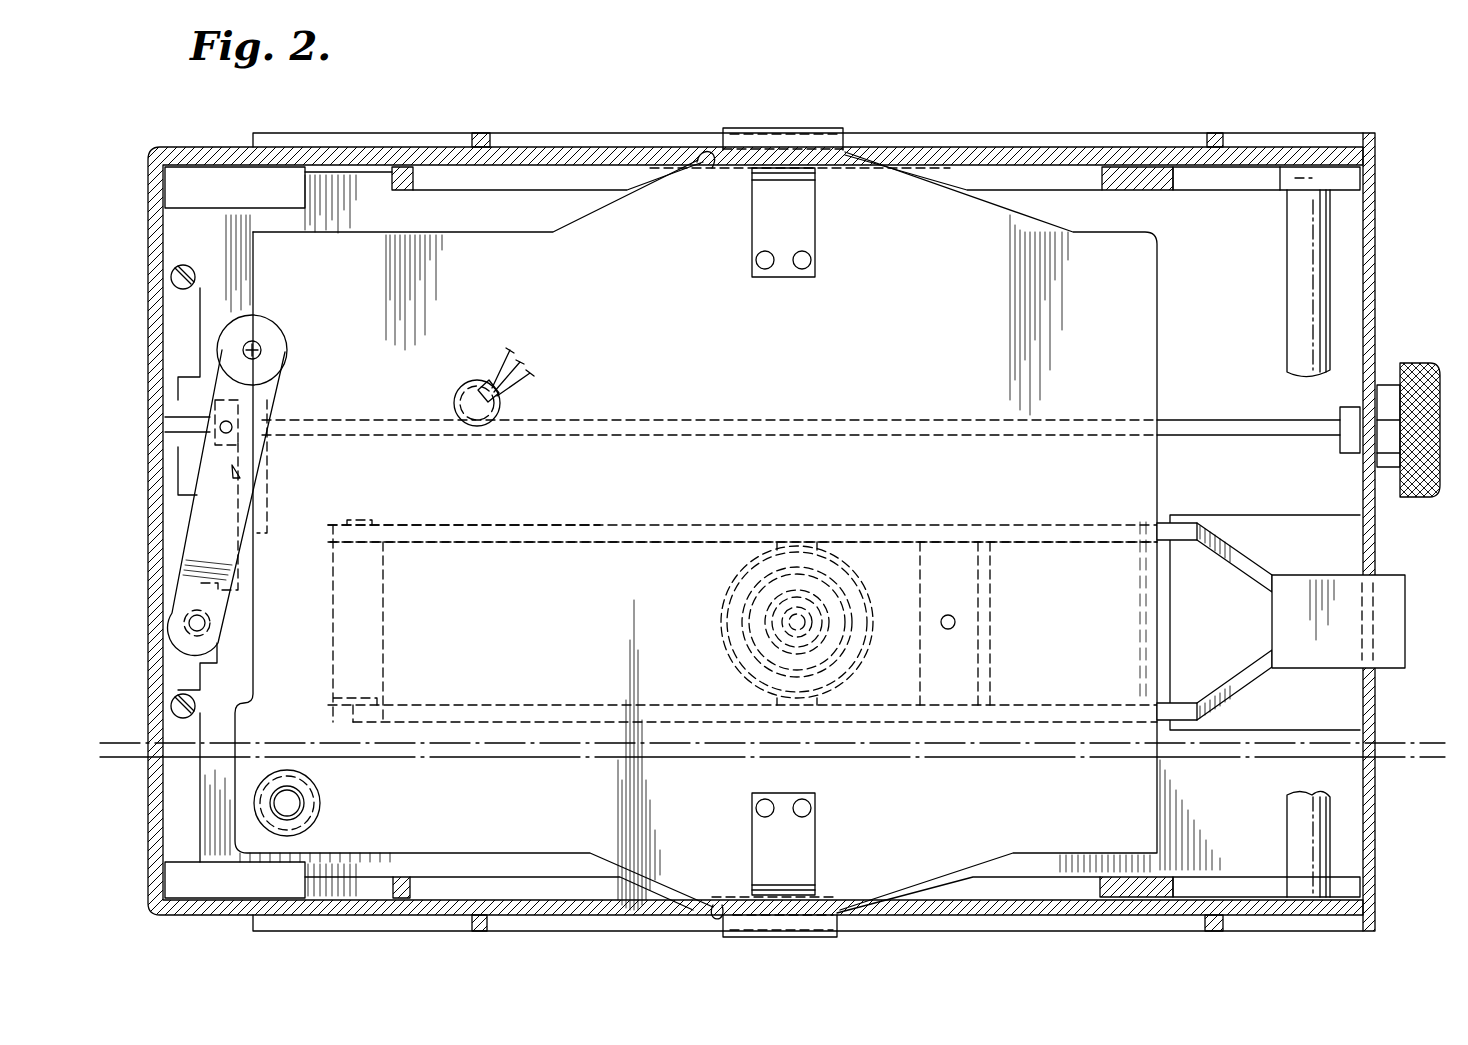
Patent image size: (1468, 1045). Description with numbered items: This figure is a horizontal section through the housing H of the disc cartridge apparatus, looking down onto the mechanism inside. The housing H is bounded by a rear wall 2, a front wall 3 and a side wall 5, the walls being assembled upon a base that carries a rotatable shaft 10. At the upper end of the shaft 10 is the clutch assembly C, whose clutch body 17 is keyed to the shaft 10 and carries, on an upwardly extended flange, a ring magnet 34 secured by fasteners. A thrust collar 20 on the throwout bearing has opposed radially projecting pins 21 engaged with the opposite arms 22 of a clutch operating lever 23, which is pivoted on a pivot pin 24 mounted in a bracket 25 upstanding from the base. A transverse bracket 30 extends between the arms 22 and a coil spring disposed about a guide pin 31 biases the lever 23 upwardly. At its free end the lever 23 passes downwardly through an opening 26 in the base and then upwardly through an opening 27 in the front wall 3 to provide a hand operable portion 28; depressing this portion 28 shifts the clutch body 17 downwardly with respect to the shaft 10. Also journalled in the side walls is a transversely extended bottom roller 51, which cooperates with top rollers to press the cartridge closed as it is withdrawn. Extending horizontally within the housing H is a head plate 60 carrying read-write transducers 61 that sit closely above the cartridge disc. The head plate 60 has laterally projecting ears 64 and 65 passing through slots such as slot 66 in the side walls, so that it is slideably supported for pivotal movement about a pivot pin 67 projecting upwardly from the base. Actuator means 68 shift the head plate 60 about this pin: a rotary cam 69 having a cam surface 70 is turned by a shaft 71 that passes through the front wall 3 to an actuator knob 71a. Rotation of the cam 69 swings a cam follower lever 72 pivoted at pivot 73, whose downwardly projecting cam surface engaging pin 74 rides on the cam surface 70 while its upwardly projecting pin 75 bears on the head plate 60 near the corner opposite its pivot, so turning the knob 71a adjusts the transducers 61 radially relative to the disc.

The housing H is at (166, 140).
The rear wall 2 is at (160, 332).
The front wall 3 is at (1375, 224).
The side wall 5 is at (535, 905).
The rotatable shaft 10 is at (770, 628).
The clutch body 17 is at (838, 592).
The thrust collar 20 is at (740, 668).
The pins 21 is at (830, 535).
The arms 22 is at (690, 530).
The clutch operating lever 23 is at (565, 520).
The pivot pin 24 is at (350, 724).
The bracket 25 is at (385, 624).
The opening 26 is at (1172, 578).
The opening 27 is at (1372, 672).
The hand operable portion 28 is at (1382, 590).
The transverse bracket 30 is at (990, 656).
The guide pin 31 is at (952, 622).
The ring magnet 34 is at (750, 580).
The bottom roller 51 is at (1295, 270).
The head plate 60 is at (797, 531).
The read-write transducers 61 is at (500, 412).
The ear 64 is at (805, 140).
The ear 65 is at (805, 915).
The slot 66 is at (712, 158).
The pivot pin 67 is at (292, 803).
The actuator means 68 is at (188, 500).
The rotary cam 69 is at (272, 500).
The cam surface 70 is at (245, 476).
The shaft 71 is at (1195, 436).
The actuator knob 71a is at (1420, 366).
The cam follower lever 72 is at (215, 562).
The pivot 73 is at (197, 623).
The cam surface engaging pin 74 is at (238, 420).
The pin 75 is at (262, 352).
The clutch assembly C is at (855, 700).